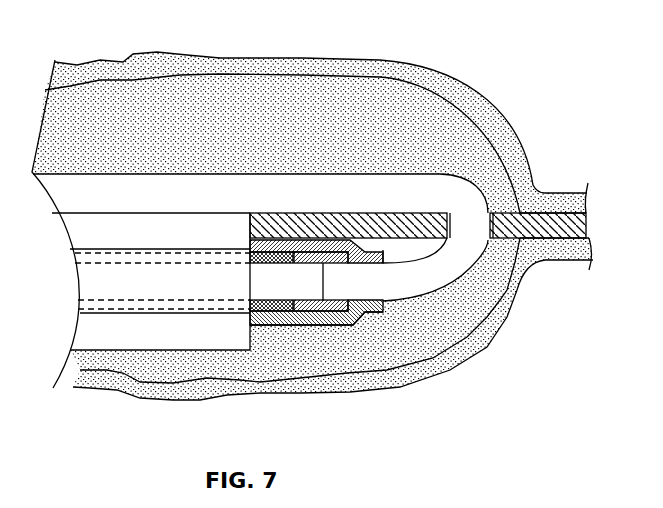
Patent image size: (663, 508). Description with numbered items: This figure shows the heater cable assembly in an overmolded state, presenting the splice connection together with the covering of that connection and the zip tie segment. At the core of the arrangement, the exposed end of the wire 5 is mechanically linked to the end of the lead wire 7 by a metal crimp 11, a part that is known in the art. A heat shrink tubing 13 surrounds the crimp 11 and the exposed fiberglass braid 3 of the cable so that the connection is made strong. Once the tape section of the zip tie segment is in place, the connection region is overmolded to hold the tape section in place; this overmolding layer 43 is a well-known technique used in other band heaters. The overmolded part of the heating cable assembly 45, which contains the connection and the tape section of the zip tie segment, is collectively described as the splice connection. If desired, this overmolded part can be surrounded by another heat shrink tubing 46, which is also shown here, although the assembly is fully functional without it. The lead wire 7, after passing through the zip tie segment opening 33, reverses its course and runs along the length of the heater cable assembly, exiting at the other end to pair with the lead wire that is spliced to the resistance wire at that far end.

The fiberglass braid 3 is at (272, 312).
The wire 5 is at (313, 290).
The lead wire 7 is at (438, 193).
The metal crimp 11 is at (360, 314).
The heat shrink tubing 13 is at (313, 316).
The zip tie segment opening 33 is at (490, 205).
The overmolding layer 43 is at (258, 90).
The overmolded part of the heating cable assembly 45 is at (380, 59).
The heat shrink tubing 46 is at (100, 72).